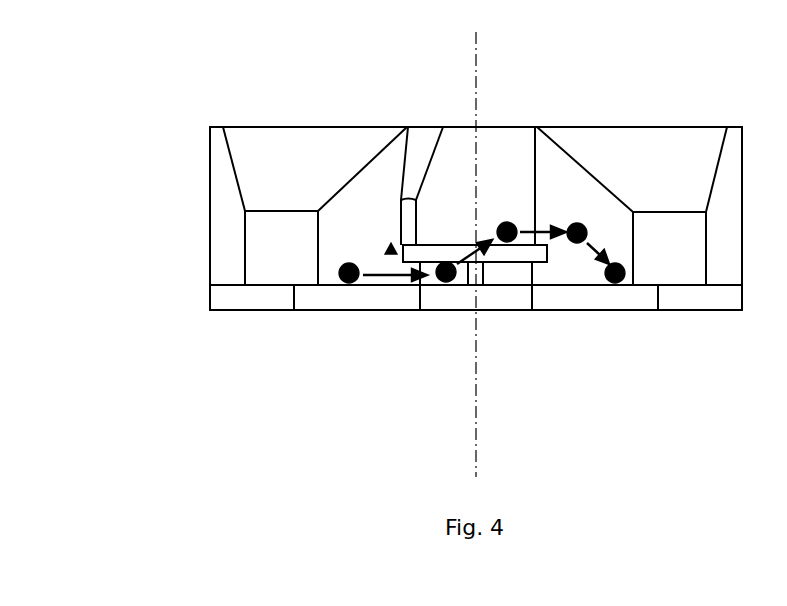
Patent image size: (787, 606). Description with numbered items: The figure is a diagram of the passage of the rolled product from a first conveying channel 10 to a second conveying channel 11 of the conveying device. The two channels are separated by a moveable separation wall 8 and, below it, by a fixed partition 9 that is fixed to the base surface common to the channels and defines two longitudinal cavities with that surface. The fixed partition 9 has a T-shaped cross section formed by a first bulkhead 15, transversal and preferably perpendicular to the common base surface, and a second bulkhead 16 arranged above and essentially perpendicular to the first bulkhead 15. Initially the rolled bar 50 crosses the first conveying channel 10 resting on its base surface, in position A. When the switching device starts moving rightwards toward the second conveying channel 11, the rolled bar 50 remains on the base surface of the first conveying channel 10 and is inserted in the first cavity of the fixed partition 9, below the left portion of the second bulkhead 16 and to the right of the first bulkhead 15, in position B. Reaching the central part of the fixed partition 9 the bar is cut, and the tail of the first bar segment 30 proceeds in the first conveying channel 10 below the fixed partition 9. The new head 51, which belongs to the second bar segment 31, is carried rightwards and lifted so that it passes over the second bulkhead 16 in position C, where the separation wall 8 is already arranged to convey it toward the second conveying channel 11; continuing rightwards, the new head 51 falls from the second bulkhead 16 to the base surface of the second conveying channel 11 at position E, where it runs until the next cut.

The separation wall 8 is at (412, 172).
The fixed partition 9 is at (385, 246).
The first conveying channel 10 is at (270, 265).
The second conveying channel 11 is at (681, 247).
The first bulkhead 15 is at (479, 272).
The second bulkhead 16 is at (450, 243).
The first bar segment 30 is at (440, 278).
The second bar segment 31 is at (617, 276).
The rolled bar 50 is at (341, 280).
The new head 51 is at (580, 228).